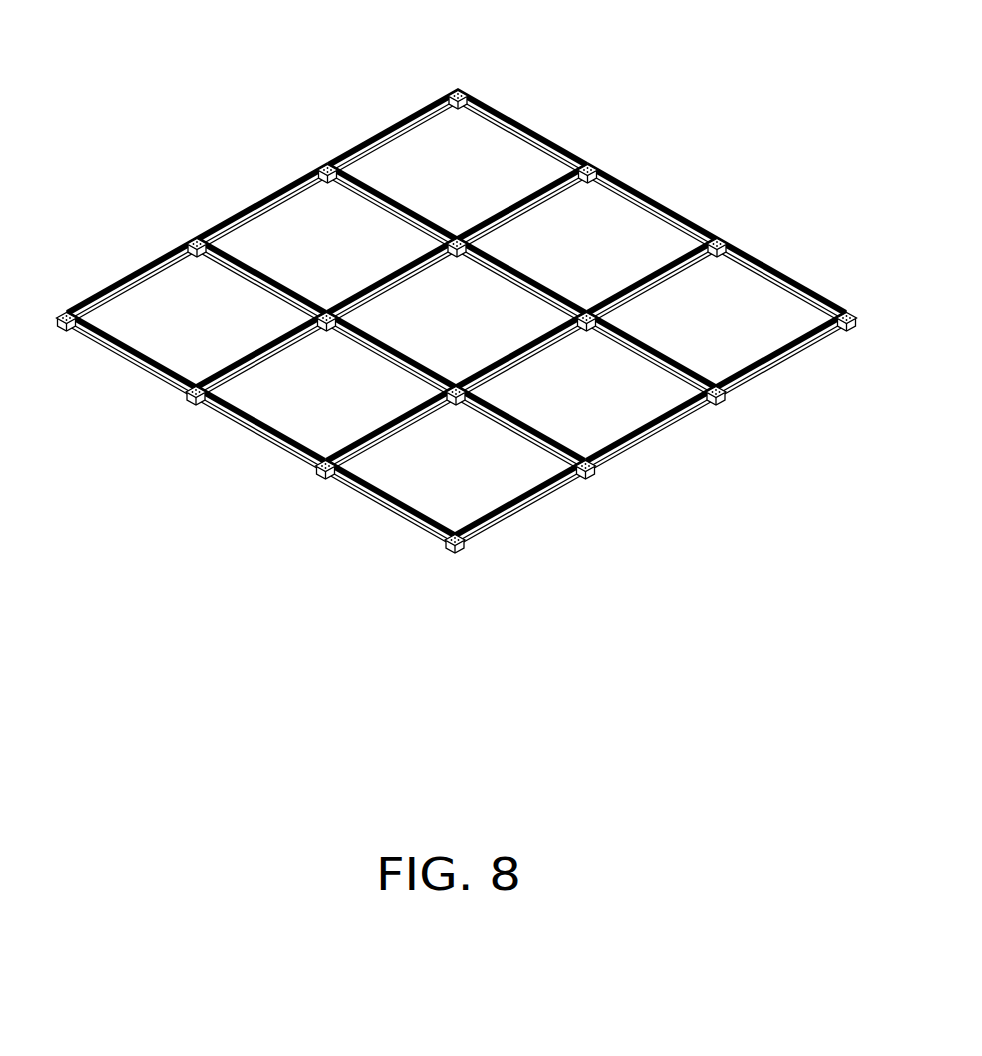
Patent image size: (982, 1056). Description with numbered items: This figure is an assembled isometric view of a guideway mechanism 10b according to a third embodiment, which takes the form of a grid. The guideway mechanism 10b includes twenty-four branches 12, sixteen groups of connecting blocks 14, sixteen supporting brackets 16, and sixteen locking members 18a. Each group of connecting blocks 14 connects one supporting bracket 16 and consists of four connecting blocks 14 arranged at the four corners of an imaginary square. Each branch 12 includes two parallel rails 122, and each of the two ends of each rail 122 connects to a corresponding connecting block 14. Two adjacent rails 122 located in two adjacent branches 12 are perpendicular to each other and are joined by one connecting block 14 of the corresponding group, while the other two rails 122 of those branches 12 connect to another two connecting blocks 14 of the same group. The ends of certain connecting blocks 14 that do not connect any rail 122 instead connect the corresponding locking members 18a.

The guideway mechanism 10b is at (562, 70).
The branch 12 is at (650, 200).
The rail 122 is at (380, 128).
The connecting block 14 is at (735, 244).
The supporting bracket 16 is at (586, 156).
The locking member 18a is at (847, 327).